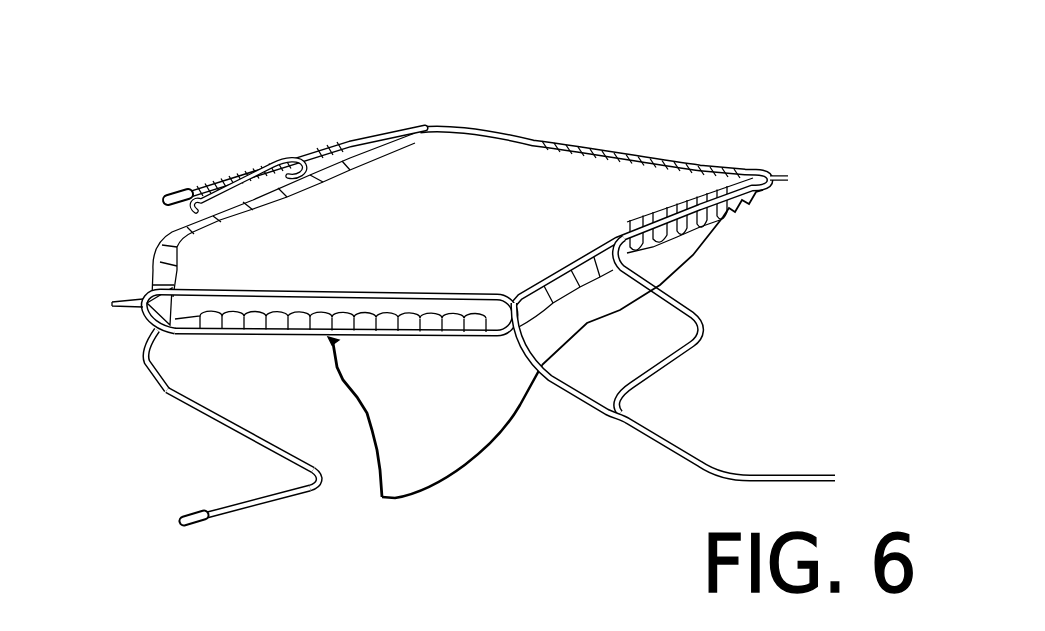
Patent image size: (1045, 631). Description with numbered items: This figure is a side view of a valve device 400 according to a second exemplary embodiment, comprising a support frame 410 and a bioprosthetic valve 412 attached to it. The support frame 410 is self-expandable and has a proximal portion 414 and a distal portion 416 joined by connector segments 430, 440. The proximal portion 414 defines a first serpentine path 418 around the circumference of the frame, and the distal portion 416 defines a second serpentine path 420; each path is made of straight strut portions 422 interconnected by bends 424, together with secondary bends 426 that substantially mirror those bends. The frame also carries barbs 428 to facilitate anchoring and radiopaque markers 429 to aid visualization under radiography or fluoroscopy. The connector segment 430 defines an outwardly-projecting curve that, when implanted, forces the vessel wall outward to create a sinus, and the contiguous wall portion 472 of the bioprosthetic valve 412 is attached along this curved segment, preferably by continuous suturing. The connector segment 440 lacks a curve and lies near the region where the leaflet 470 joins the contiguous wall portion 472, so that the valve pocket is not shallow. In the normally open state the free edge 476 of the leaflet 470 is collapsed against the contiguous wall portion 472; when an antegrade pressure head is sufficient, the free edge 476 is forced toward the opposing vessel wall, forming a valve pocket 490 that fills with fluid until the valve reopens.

The valve device 400 is at (426, 299).
The support frame 410 is at (153, 248).
The bioprosthetic valve 412 is at (297, 230).
The proximal portion 414 is at (163, 422).
The distal portion 416 is at (746, 373).
The first serpentine path 418 is at (203, 452).
The second serpentine path 420 is at (676, 398).
The straight strut portions 422 is at (167, 391).
The bends 424 is at (303, 493).
The secondary bends 426 is at (700, 318).
The barbs 428 is at (120, 298).
The radiopaque markers 429 is at (162, 193).
The connector segment 430 is at (445, 126).
The connector segment 440 is at (350, 292).
The leaflet 470 is at (433, 447).
The contiguous wall portion 472 is at (453, 222).
The free edge 476 is at (373, 433).
The valve pocket 490 is at (345, 388).